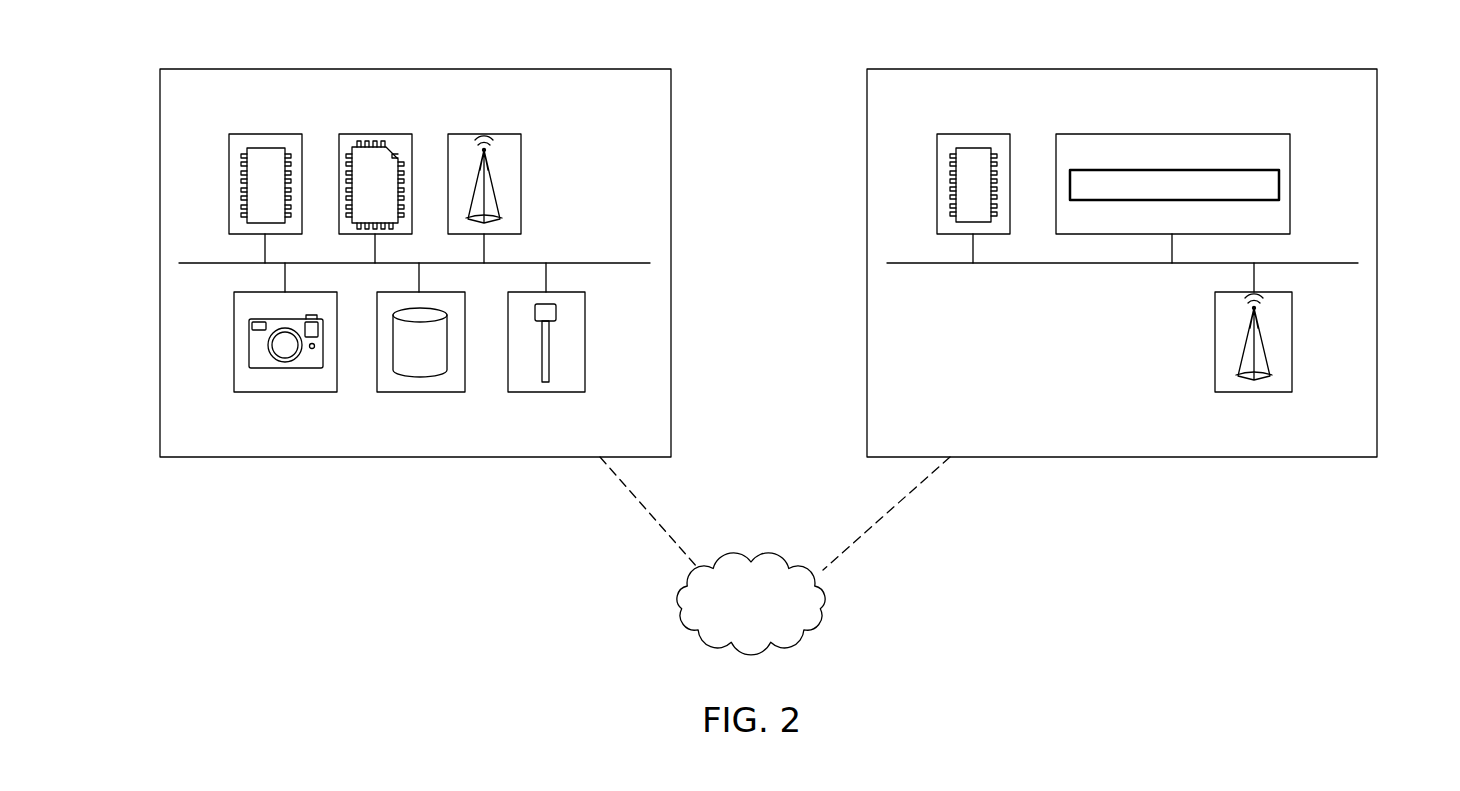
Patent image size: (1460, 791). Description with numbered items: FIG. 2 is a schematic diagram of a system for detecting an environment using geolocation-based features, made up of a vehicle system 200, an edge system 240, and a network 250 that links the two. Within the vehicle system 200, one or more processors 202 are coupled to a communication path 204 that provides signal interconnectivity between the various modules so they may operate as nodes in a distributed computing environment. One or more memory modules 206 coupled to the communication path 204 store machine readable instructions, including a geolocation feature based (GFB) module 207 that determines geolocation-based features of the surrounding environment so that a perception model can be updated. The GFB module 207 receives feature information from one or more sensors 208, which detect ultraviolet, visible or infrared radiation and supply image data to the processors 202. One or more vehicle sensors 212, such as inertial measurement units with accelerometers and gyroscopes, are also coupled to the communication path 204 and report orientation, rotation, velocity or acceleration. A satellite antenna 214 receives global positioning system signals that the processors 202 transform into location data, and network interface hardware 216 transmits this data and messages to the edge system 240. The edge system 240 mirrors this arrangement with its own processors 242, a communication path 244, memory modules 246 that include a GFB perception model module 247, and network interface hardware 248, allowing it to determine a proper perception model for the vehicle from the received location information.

The vehicle system 200 is at (160, 263).
The processors 202 is at (265, 134).
The communication path 204 is at (610, 263).
The memory modules 206 is at (375, 134).
The GFB module 207 is at (388, 213).
The sensors 208 is at (285, 392).
The vehicle sensors 212 is at (419, 392).
The satellite antenna 214 is at (546, 392).
The network interface hardware 216 is at (484, 134).
The edge system 240 is at (1377, 263).
The processors 242 is at (973, 134).
The communication path 244 is at (1038, 263).
The memory modules 246 is at (1172, 134).
The GFB perception model module 247 is at (1279, 185).
The network interface hardware 248 is at (1254, 392).
The network 250 is at (786, 558).